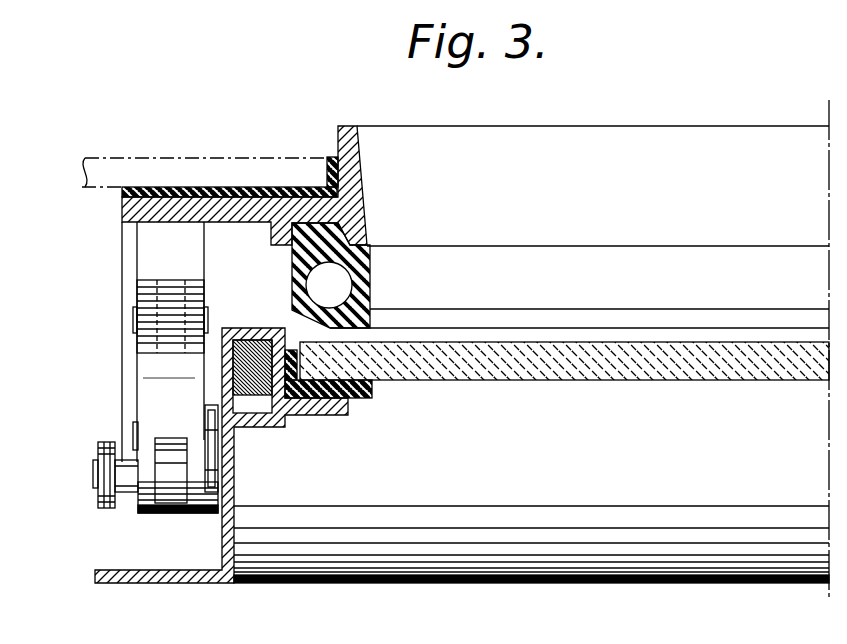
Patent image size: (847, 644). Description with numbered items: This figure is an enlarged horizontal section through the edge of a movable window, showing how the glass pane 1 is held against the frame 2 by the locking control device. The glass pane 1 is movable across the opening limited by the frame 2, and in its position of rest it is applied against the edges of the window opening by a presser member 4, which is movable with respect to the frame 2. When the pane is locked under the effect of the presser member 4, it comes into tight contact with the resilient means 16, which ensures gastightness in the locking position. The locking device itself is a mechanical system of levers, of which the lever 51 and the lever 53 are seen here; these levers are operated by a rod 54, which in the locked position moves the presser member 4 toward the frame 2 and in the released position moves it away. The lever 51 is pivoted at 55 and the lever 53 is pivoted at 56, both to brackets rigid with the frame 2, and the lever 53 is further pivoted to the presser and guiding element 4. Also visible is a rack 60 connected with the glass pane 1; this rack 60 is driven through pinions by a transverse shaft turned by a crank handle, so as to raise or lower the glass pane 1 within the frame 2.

The glass pane 1 is at (475, 367).
The frame 2 is at (122, 209).
The presser member 4 is at (223, 537).
The resilient means 16 is at (356, 267).
The lever 51 is at (143, 379).
The lever 53 is at (212, 497).
The rod 54 is at (98, 445).
The pivot 55 is at (134, 323).
The pivot 56 is at (223, 460).
The rack 60 is at (243, 347).